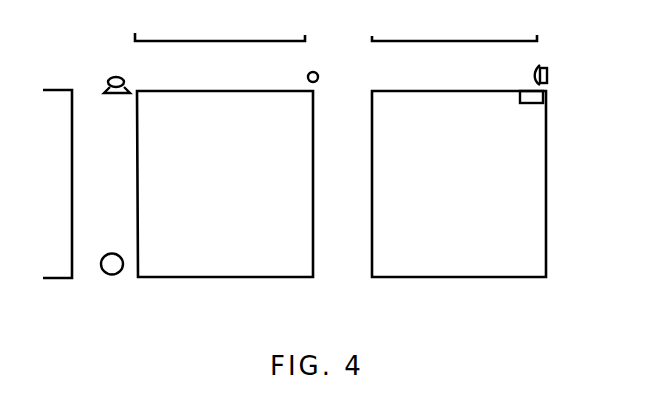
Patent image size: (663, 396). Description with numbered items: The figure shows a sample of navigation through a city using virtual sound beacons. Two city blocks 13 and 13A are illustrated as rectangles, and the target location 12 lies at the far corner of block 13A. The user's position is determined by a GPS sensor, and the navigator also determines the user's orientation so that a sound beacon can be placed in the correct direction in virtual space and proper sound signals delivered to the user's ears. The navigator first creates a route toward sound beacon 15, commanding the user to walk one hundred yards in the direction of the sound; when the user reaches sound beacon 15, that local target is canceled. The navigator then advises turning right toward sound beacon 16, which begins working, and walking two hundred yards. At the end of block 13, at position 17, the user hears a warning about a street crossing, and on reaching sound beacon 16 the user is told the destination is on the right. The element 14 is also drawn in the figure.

The target location 12 is at (546, 95).
The block 13 is at (313, 255).
The block 13A is at (547, 225).
The sensor 14 is at (103, 272).
The sound beacon 15 is at (108, 78).
The sound beacon 16 is at (547, 64).
The position 17 is at (313, 72).